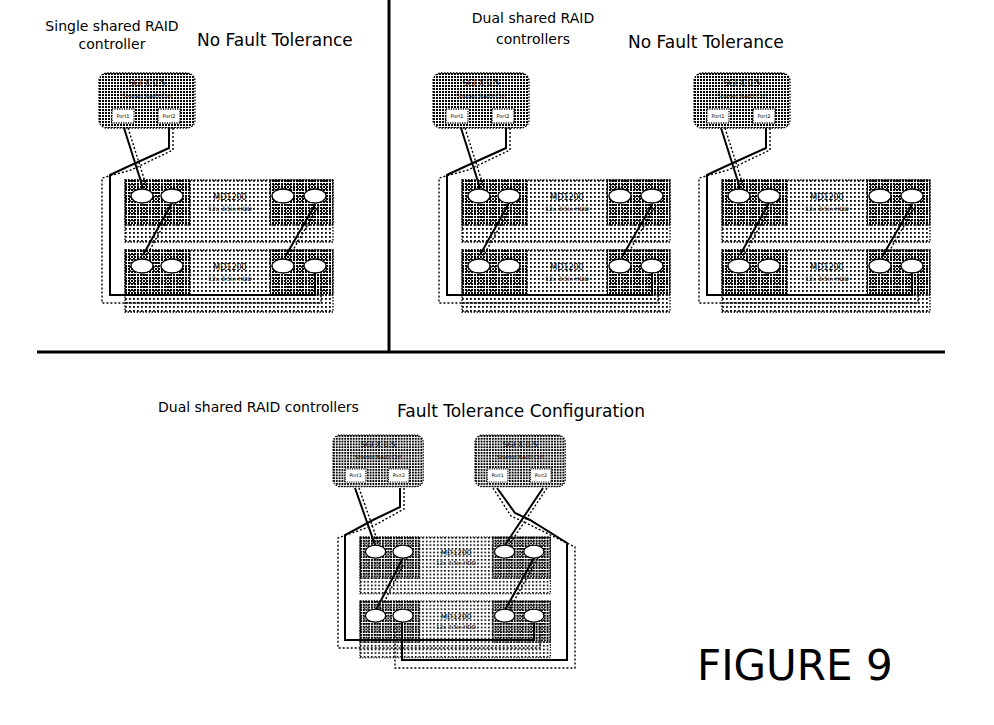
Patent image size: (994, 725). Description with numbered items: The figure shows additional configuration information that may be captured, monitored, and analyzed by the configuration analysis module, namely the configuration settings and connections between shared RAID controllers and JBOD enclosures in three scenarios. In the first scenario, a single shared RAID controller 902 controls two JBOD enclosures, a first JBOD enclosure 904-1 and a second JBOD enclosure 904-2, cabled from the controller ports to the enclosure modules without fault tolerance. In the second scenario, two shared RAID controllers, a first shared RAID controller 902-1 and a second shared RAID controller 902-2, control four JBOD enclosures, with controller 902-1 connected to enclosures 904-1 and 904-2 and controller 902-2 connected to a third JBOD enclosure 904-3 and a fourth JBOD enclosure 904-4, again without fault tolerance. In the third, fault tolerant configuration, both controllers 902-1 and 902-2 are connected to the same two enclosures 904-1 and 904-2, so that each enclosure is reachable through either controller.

The shared RAID controller 902 is at (196, 92).
The first shared RAID controller 902-1 is at (529, 92).
The second shared RAID controller 902-2 is at (790, 92).
The first JBOD enclosure 904-1 is at (281, 183).
The second JBOD enclosure 904-2 is at (233, 311).
The third JBOD enclosure 904-3 is at (835, 182).
The fourth JBOD enclosure 904-4 is at (825, 310).